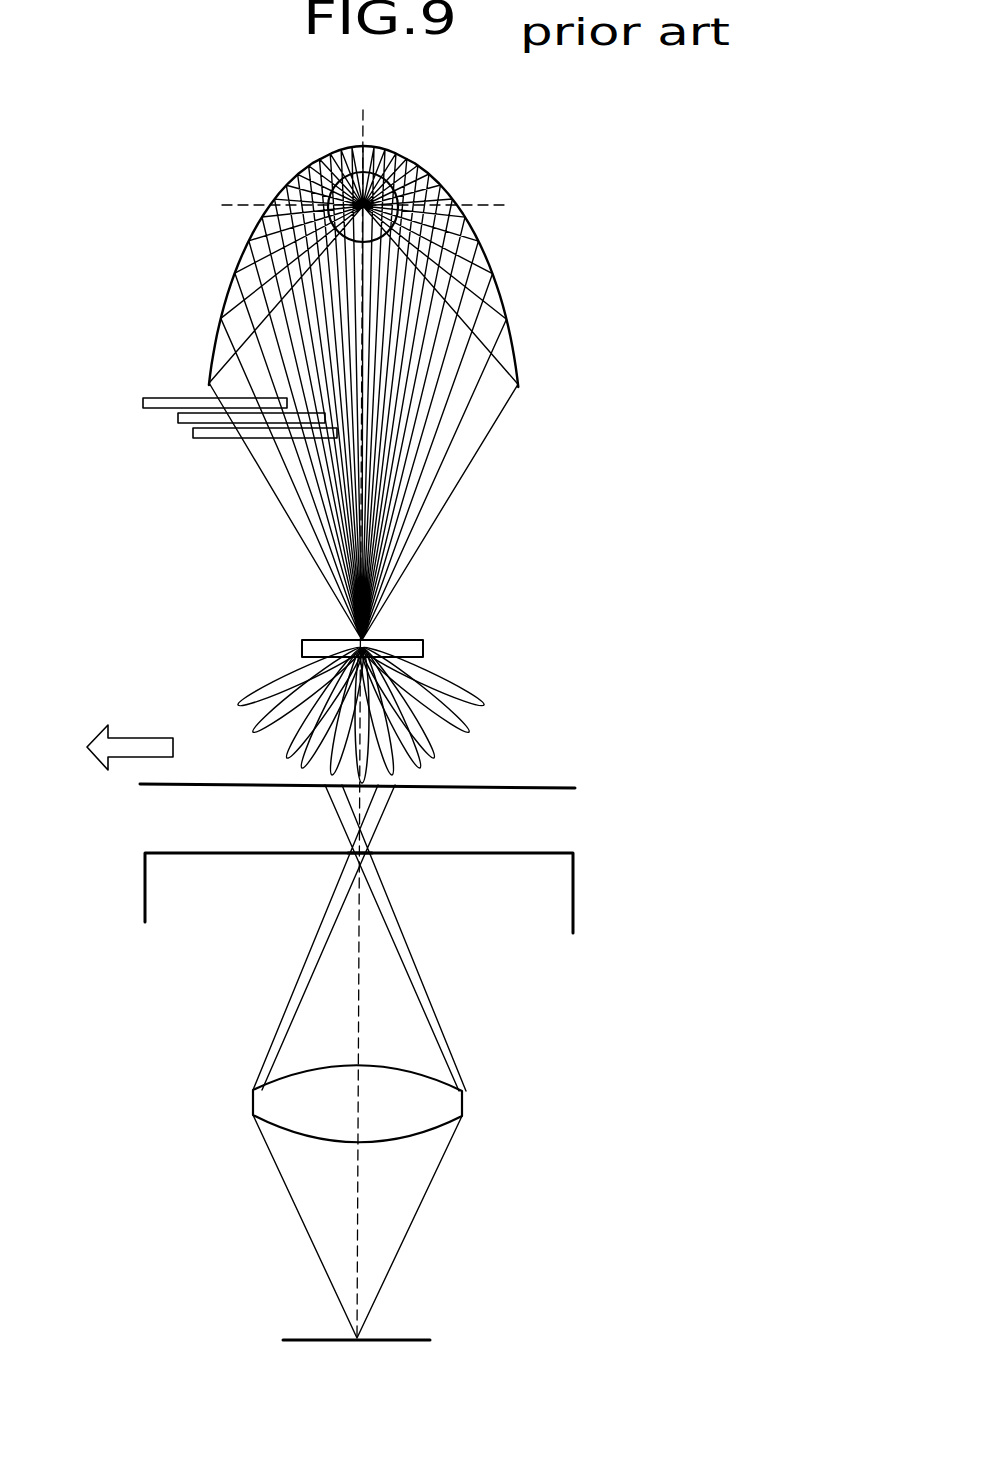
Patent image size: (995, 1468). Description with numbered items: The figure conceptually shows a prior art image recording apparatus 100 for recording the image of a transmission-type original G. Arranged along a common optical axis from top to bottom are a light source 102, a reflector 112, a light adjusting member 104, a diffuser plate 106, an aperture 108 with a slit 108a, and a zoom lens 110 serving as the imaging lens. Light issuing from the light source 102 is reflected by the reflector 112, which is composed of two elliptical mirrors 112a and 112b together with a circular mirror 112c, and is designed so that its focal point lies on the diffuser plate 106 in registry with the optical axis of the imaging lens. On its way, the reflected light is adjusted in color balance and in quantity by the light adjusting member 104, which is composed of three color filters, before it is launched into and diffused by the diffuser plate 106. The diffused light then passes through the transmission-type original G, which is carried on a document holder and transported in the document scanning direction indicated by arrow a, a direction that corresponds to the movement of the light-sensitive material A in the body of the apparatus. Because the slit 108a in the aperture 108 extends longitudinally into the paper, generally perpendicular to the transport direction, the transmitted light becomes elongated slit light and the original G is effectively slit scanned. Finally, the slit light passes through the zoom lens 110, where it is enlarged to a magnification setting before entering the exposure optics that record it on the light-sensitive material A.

The image recording apparatus 100 is at (635, 385).
The light source 102 is at (372, 241).
The light adjusting member 104 is at (162, 428).
The diffuser plate 106 is at (410, 640).
The aperture 108 is at (500, 853).
The slit 108a is at (343, 864).
The zoom lens 110 is at (463, 1108).
The reflector 112 is at (567, 193).
The elliptical mirror 112a is at (502, 293).
The elliptical mirror 112b is at (237, 255).
The circular mirror 112c is at (398, 150).
The transmission-type original G is at (518, 784).
The document scanning direction a is at (148, 737).
The light-sensitive material A is at (403, 1338).